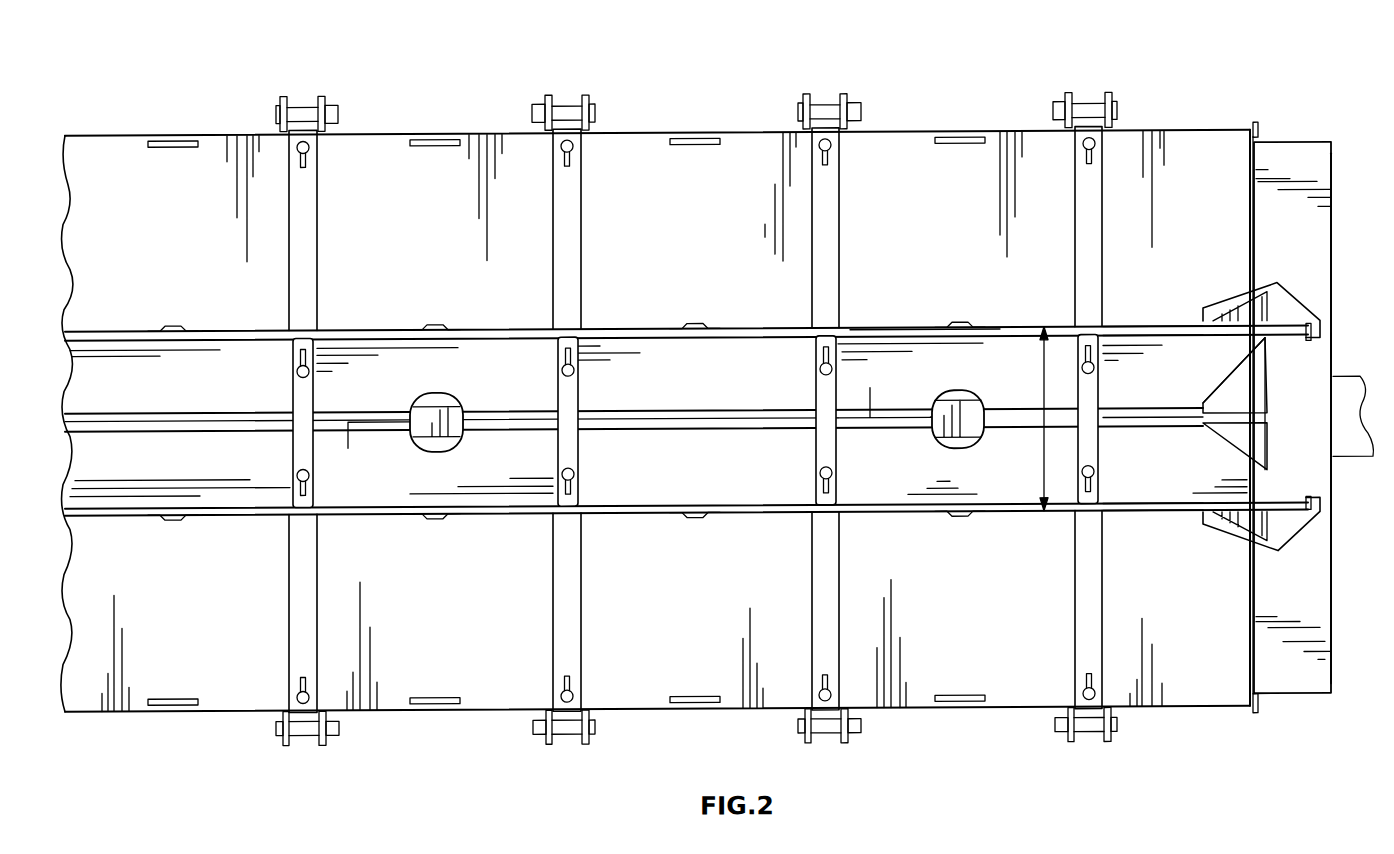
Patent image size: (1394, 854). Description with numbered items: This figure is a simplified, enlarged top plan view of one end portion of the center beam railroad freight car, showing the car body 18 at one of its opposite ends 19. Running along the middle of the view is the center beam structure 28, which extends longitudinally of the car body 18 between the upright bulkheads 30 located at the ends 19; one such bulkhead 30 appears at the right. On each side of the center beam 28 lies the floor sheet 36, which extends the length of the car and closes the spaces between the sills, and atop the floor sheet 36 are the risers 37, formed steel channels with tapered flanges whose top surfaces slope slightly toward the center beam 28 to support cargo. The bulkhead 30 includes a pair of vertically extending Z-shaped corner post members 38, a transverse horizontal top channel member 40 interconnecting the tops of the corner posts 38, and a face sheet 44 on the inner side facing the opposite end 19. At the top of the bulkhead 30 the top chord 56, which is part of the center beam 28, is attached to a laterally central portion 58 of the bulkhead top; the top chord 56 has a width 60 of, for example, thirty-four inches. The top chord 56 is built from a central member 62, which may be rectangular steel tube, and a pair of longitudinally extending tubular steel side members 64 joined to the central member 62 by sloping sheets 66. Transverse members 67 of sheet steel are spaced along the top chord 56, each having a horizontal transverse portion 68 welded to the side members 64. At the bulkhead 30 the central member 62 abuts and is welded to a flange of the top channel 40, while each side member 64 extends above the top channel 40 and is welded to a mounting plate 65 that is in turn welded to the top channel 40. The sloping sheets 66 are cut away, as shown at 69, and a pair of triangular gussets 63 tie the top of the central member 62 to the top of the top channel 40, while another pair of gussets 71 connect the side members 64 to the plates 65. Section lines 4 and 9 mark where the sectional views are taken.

The car body 18 is at (658, 67).
The opposite end 19 is at (1341, 352).
The center beam structure 28 is at (645, 324).
The bulkhead 30 is at (1335, 237).
The floor sheet 36 is at (760, 152).
The riser 37 is at (574, 208).
The corner post member 38 is at (1258, 131).
The horizontal top channel member 40 is at (1302, 152).
The face sheet 44 is at (1249, 224).
The top chord 56 is at (905, 332).
The laterally central portion 58 is at (1312, 487).
The width 60 is at (1043, 377).
The central member 62 is at (720, 414).
The triangular gusset 63 is at (1264, 458).
The side member 64 is at (1140, 331).
The mounting plate 65 is at (1290, 308).
The sloping sheet 66 is at (1180, 347).
The transverse member 67 is at (838, 485).
The horizontal transverse portion 68 is at (1095, 457).
The cut-away 69 is at (1236, 369).
The gusset 71 is at (1240, 317).
The section line 4 is at (870, 79).
The section line 9 is at (833, 287).